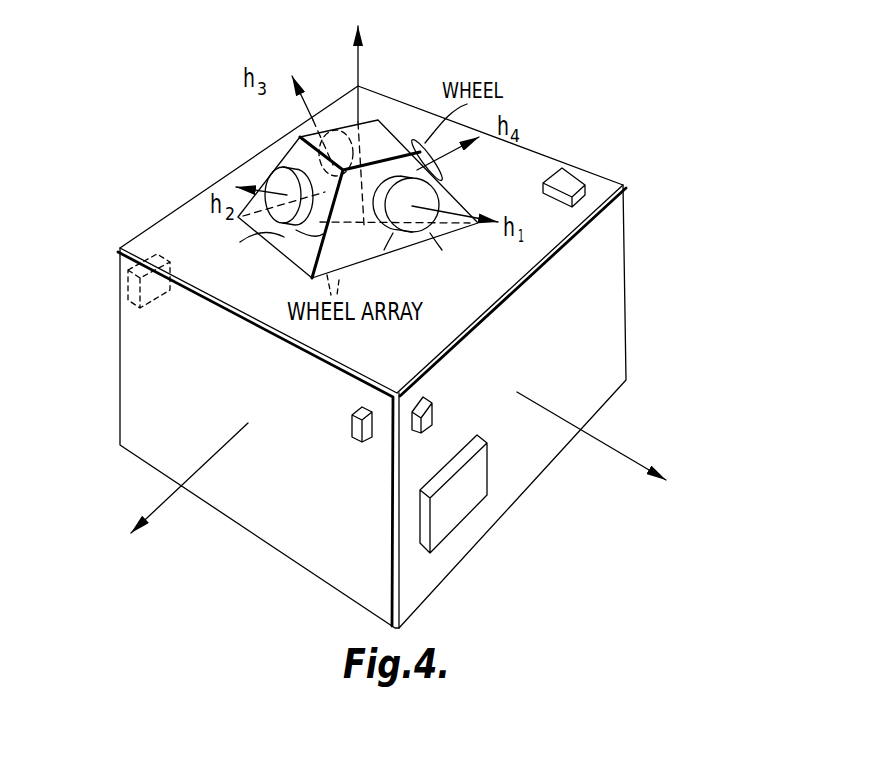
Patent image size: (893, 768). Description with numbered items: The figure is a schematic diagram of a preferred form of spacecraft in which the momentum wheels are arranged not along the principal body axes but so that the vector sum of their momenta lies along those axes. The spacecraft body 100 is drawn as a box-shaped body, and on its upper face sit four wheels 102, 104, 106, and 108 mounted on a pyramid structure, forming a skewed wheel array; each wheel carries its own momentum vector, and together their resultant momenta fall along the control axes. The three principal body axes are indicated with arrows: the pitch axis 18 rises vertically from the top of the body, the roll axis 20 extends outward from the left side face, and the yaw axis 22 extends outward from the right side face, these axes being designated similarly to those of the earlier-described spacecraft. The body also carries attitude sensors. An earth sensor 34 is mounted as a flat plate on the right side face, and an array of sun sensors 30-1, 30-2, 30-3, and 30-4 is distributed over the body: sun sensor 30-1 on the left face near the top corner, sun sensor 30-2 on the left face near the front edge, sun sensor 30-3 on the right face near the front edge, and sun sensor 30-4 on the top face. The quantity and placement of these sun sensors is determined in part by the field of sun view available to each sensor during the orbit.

The spacecraft body 100 is at (628, 291).
The pitch axis 18 is at (362, 61).
The roll axis 20 is at (158, 507).
The yaw axis 22 is at (617, 452).
The wheel 102 is at (435, 234).
The wheel 104 is at (260, 234).
The wheel 106 is at (345, 125).
The wheel 108 is at (445, 167).
The sun sensor 30-1 is at (128, 284).
The sun sensor 30-2 is at (352, 413).
The sun sensor 30-3 is at (430, 398).
The sun sensor 30-4 is at (573, 173).
The earth sensor 34 is at (487, 490).